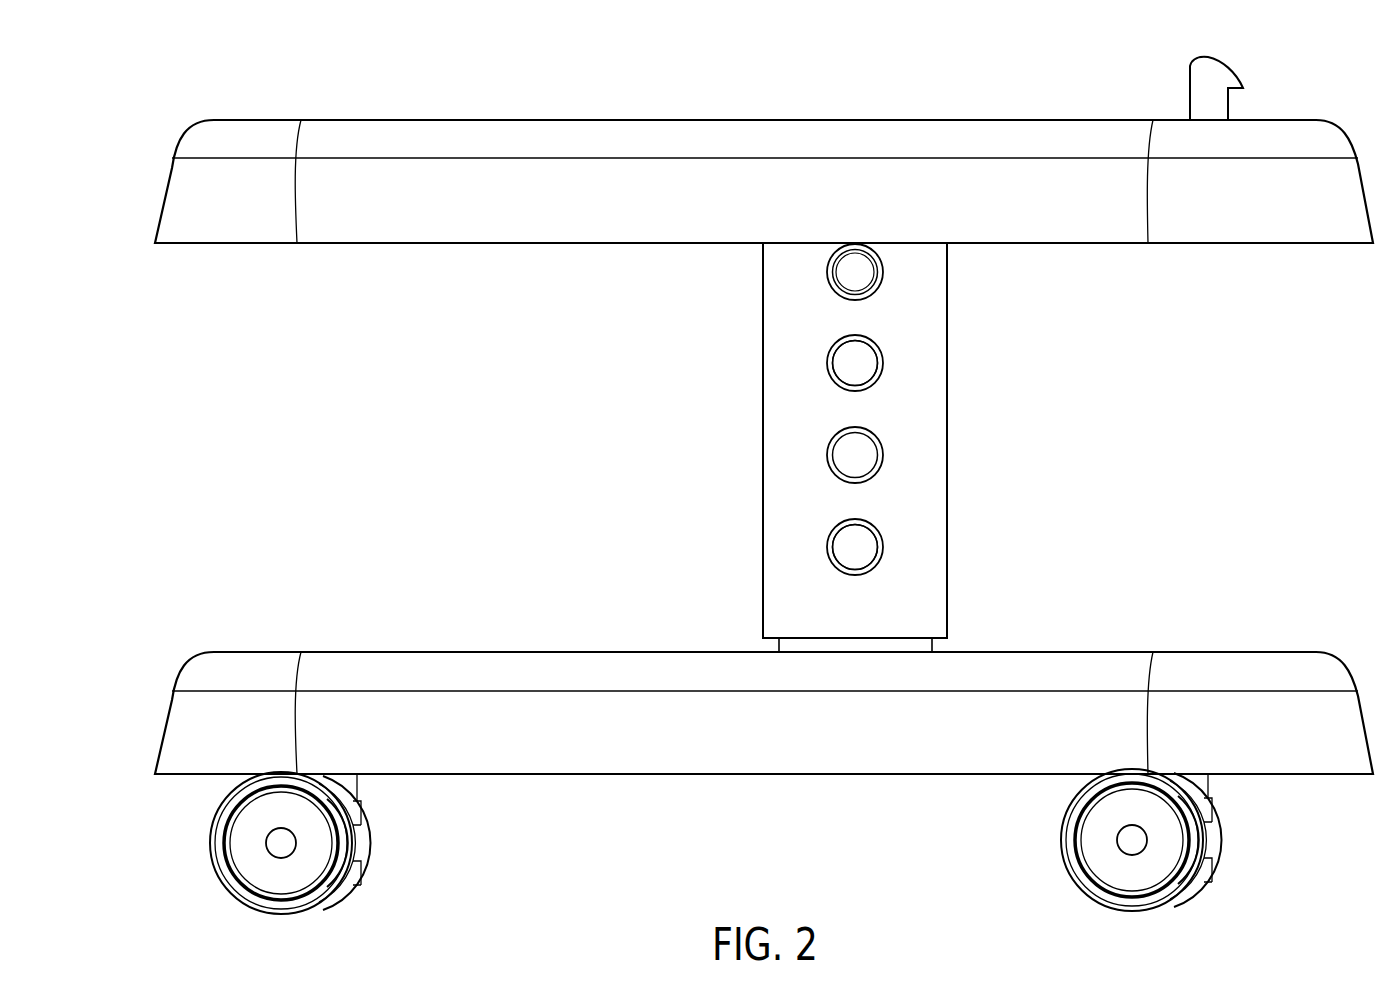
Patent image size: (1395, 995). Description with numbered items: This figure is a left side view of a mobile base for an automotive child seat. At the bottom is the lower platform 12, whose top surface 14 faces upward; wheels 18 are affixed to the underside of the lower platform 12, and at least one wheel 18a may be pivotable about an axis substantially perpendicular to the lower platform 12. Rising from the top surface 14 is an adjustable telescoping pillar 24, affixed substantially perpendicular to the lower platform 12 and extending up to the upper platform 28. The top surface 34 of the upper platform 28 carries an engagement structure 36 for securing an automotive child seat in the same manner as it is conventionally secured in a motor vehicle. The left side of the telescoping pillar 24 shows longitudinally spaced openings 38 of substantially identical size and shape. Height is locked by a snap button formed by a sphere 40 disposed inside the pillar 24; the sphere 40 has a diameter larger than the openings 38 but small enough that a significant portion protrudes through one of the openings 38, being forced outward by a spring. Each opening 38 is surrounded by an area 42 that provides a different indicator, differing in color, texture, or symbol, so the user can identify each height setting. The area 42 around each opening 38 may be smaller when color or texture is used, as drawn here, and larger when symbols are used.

The lower platform 12 is at (190, 658).
The top surface 14 is at (1110, 652).
The wheels 18 is at (355, 886).
The pivotable wheel 18a is at (1067, 862).
The adjustable telescoping pillar 24 is at (763, 417).
The upper platform 28 is at (180, 133).
The top surface 34 is at (632, 120).
The engagement structure 36 is at (1190, 64).
The longitudinally spaced openings 38 is at (840, 343).
The sphere 40 is at (858, 270).
The area 42 is at (875, 350).